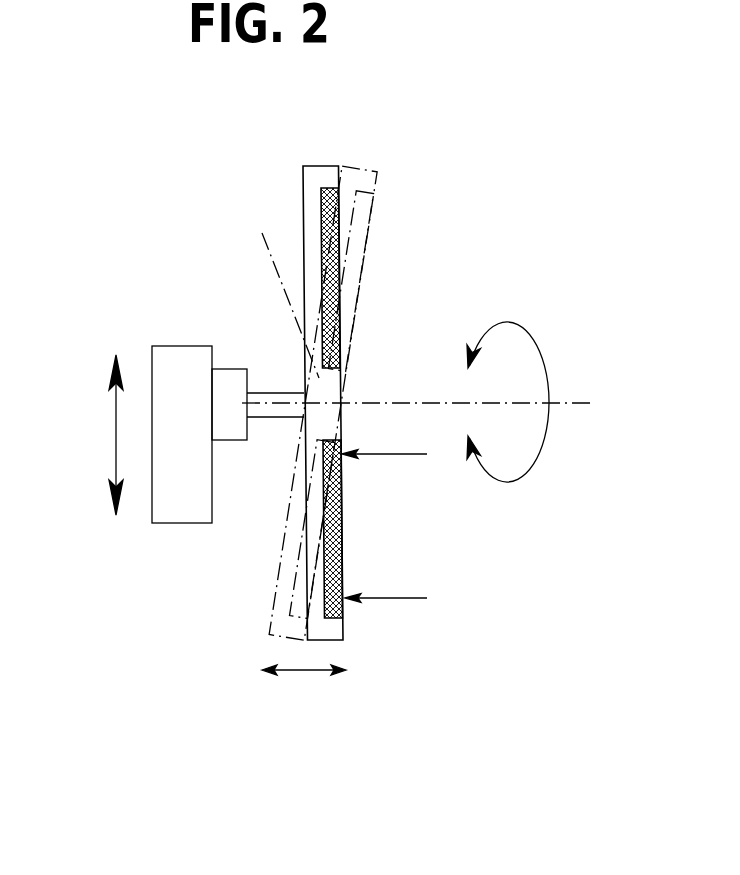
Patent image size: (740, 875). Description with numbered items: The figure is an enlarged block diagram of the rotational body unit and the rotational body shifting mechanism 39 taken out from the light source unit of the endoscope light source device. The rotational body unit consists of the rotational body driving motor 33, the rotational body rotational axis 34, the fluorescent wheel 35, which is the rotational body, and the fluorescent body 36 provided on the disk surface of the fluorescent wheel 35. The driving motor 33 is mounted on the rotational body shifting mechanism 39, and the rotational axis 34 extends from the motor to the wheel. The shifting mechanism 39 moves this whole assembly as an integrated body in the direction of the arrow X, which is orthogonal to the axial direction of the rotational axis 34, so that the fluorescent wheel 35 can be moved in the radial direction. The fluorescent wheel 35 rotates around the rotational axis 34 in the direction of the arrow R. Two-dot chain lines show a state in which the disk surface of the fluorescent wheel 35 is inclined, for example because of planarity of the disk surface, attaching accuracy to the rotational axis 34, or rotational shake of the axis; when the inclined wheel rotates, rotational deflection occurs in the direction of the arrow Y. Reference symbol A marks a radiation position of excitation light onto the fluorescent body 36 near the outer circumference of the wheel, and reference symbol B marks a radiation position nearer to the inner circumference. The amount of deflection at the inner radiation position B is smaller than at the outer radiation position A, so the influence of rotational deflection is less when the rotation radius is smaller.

The rotational body driving motor 33 is at (230, 392).
The rotational body rotational axis 34 is at (283, 396).
The fluorescent wheel 35 is at (310, 227).
The fluorescent body 36 is at (357, 193).
The rotational body shifting mechanism 39 is at (170, 368).
The X direction X is at (116, 460).
The Y direction Y is at (300, 668).
The rotation direction R is at (543, 437).
The radiation position near outer circumference A is at (397, 600).
The radiation position near inner circumference B is at (394, 456).